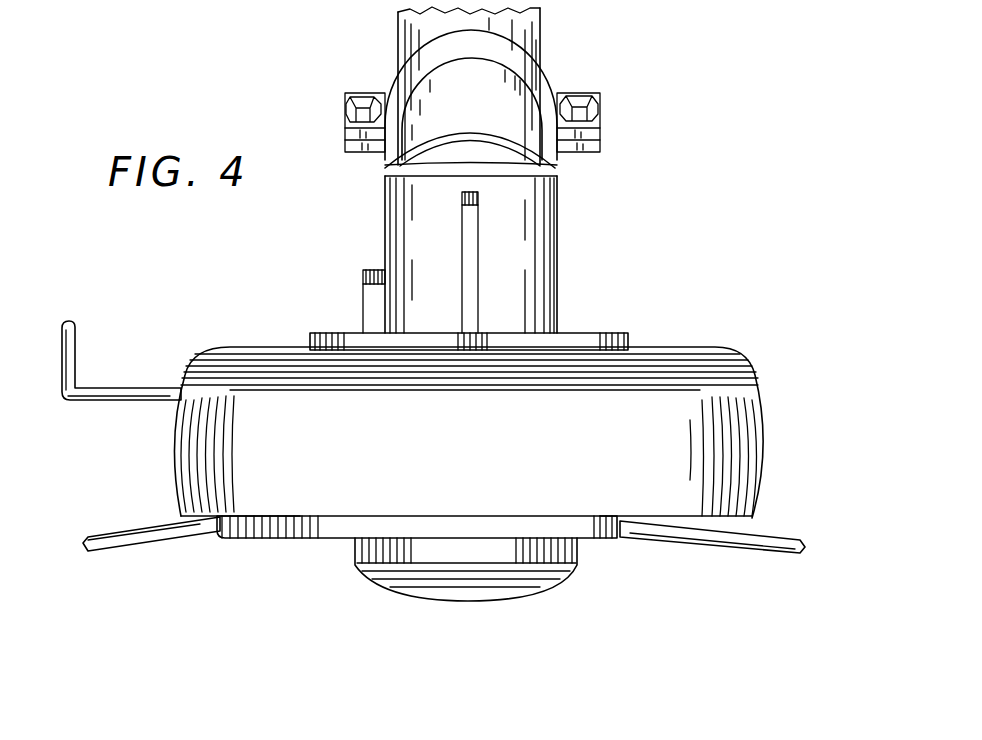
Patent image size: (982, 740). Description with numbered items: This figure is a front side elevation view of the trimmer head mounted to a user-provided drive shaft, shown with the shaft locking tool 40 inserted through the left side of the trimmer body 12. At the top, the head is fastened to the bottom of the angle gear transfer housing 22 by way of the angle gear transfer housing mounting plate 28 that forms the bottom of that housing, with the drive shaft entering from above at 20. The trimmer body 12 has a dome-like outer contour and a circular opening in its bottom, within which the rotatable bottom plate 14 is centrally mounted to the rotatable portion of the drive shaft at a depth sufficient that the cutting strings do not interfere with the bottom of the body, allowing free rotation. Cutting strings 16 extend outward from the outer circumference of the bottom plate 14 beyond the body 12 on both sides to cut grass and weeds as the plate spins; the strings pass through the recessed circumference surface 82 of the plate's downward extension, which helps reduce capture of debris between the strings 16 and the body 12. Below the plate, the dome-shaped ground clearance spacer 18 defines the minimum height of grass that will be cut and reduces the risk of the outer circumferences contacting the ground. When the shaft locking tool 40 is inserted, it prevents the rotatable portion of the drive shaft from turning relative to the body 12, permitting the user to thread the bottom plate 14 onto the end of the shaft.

The trimmer body 12 is at (698, 358).
The rotatable bottom plate 14 is at (242, 536).
The cutting string 16 is at (118, 530).
The ground clearance spacer 18 is at (578, 565).
The pipe 20 is at (541, 40).
The angle gear transfer housing 22 is at (558, 219).
The angle gear transfer housing mounting plate 28 is at (626, 333).
The shaft locking tool 40 is at (127, 390).
The recessed circumference surface 82 is at (426, 519).